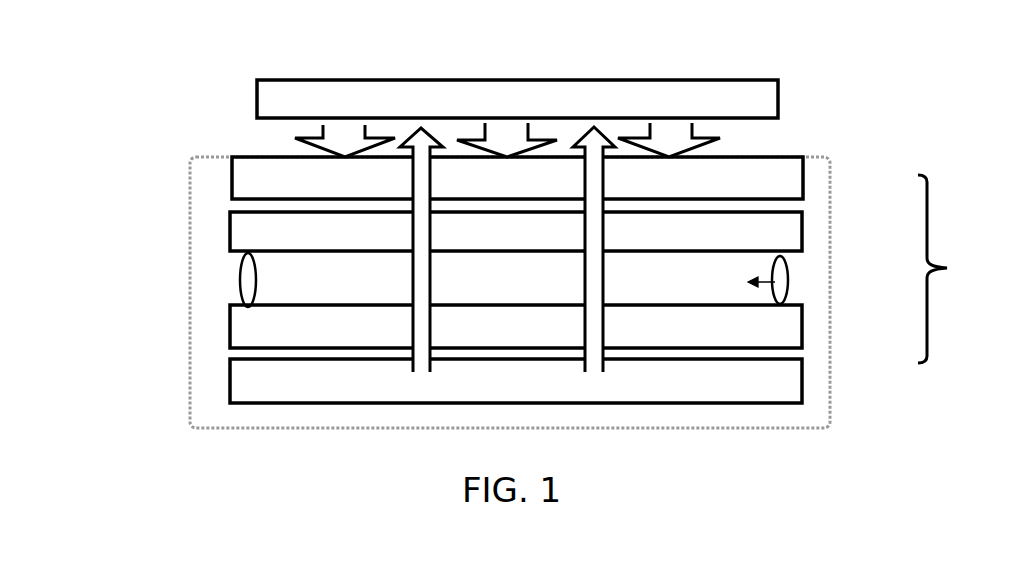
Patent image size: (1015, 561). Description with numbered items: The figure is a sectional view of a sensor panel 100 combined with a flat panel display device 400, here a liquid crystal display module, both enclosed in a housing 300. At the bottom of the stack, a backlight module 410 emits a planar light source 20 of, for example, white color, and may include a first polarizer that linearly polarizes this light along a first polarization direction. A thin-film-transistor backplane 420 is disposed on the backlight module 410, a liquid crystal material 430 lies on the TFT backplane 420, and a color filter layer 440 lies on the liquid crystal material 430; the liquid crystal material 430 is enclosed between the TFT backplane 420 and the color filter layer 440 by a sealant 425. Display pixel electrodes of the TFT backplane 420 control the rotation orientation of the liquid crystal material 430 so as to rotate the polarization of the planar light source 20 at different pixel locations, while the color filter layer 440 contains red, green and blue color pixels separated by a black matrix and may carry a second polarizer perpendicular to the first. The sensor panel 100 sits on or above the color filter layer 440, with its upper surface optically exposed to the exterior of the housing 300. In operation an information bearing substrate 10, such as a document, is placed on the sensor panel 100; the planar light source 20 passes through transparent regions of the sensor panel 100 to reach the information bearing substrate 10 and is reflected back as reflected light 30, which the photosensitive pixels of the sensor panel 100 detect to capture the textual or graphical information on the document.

The information bearing substrate 10 is at (535, 80).
The planar light source 20 is at (600, 133).
The reflected light 30 is at (667, 135).
The sensor panel 100 is at (775, 175).
The housing 300 is at (830, 417).
The flat panel display device 400 is at (965, 269).
The backlight module 410 is at (790, 383).
The thin-film-transistor backplane 420 is at (790, 332).
The sealant 425 is at (240, 285).
The liquid crystal material 430 is at (790, 277).
The color filter layer 440 is at (790, 228).